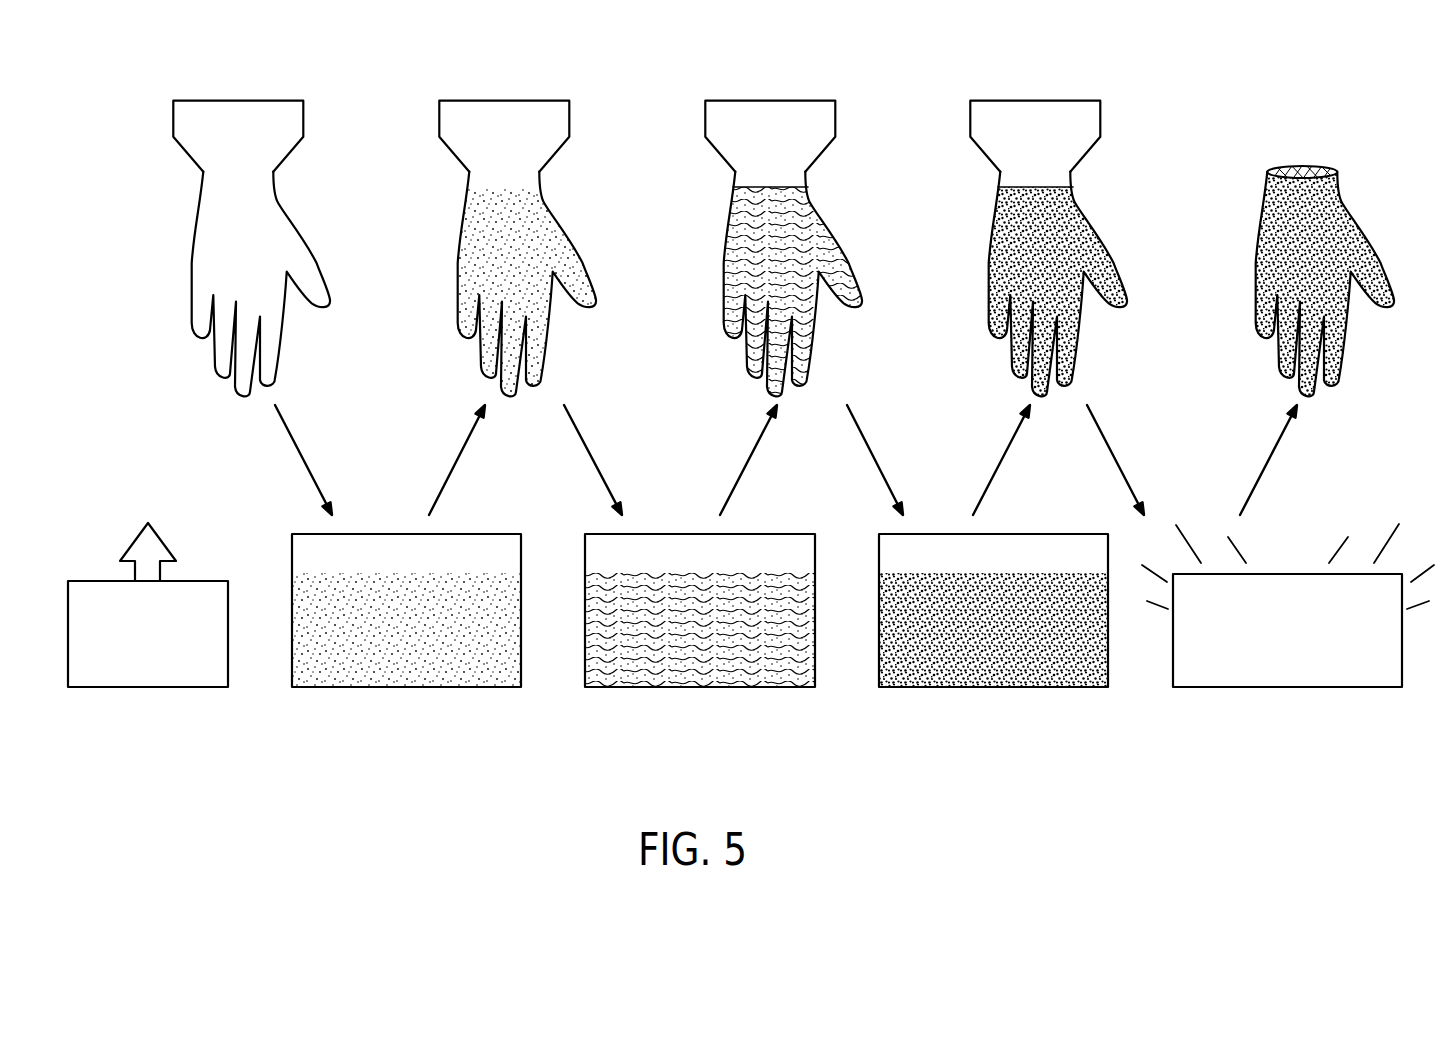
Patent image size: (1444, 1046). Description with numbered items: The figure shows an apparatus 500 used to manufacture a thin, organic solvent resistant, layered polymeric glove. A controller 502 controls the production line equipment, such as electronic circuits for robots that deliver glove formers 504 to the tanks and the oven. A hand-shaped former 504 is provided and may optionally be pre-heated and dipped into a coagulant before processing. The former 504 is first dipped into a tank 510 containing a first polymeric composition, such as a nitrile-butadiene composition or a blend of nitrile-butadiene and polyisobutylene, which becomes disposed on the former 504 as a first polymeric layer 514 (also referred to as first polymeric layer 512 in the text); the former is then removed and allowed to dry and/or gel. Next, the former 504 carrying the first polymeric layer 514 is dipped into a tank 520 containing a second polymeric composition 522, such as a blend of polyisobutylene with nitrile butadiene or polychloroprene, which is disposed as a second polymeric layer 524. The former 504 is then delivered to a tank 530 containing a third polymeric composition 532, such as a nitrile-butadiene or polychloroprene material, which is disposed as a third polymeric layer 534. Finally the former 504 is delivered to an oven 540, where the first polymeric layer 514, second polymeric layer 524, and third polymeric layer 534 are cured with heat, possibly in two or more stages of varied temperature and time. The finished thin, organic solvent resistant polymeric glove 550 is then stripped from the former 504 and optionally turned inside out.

The apparatus 500 is at (1294, 56).
The controller 502 is at (148, 688).
The former 504 is at (290, 116).
The tank 510 is at (406, 649).
The first polymeric layer 512 is at (345, 672).
The first polymeric layer 514 is at (537, 223).
The tank 520 is at (700, 649).
The second polymeric composition 522 is at (638, 672).
The second polymeric layer 524 is at (802, 223).
The tank 530 is at (993, 649).
The third polymeric composition 532 is at (932, 672).
The third polymeric layer 534 is at (1063, 223).
The oven 540 is at (1286, 688).
The polymeric glove 550 is at (1315, 146).